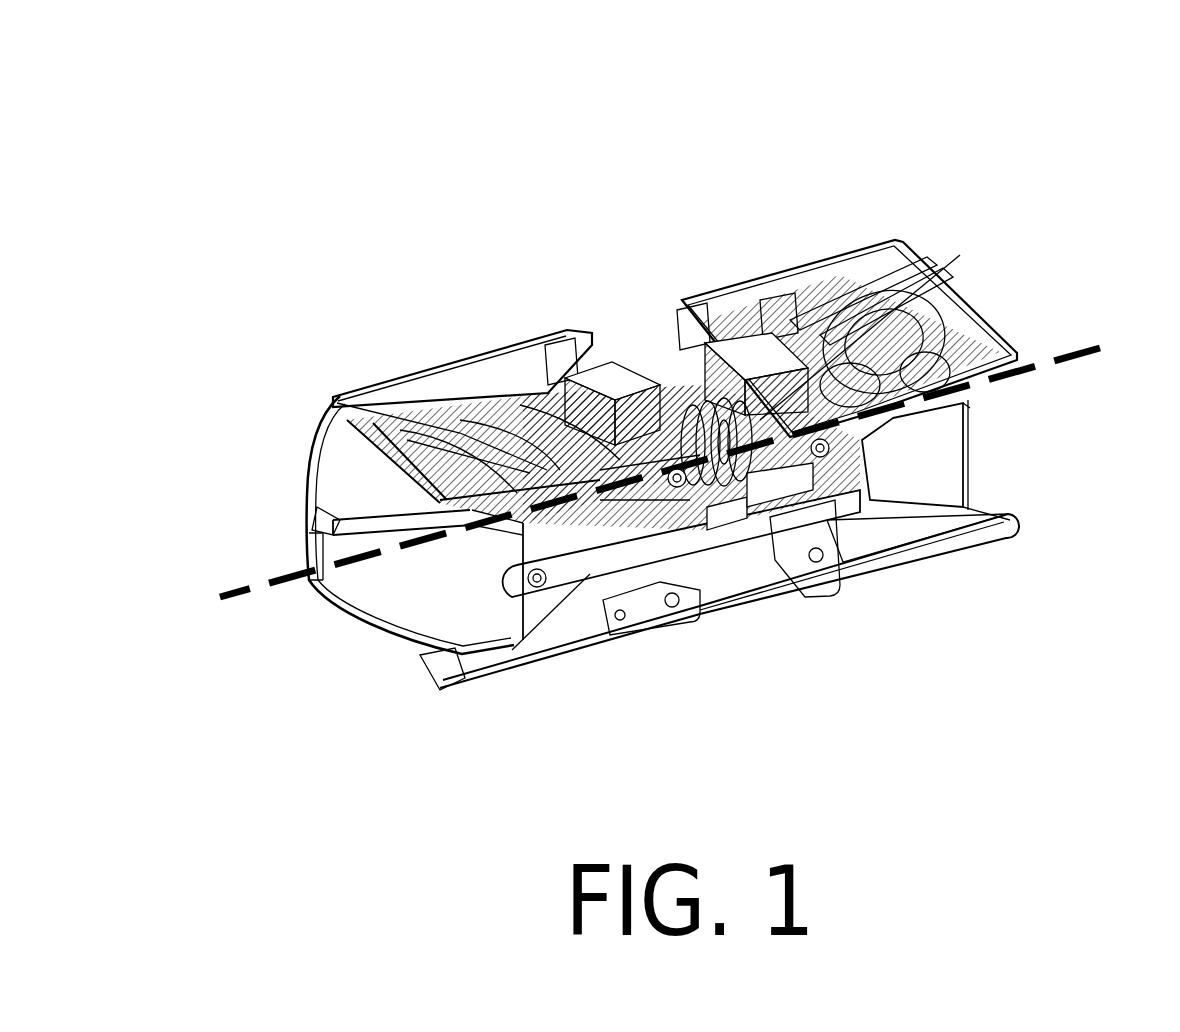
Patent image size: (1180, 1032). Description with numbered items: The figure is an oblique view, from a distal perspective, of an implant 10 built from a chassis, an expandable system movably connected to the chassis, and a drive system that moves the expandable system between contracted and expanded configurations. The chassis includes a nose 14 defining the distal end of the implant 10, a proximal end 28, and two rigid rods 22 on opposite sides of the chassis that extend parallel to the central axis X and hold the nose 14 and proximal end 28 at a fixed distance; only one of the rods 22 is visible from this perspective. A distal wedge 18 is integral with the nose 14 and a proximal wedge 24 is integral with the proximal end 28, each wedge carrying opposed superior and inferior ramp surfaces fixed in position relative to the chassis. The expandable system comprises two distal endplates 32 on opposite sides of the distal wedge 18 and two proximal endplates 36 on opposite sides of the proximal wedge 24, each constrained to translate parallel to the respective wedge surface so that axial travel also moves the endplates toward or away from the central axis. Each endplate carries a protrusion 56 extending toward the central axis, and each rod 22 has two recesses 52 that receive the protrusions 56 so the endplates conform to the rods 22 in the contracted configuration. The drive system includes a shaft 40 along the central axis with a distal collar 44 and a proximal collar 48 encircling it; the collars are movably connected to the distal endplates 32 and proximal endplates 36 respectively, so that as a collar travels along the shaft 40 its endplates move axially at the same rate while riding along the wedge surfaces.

The implant 10 is at (268, 122).
The nose 14 is at (330, 612).
The distal wedge 18 is at (556, 610).
The rods 22 is at (587, 577).
The proximal wedge 24 is at (927, 507).
The proximal end 28 is at (963, 445).
The distal endplates 32 is at (440, 370).
The proximal endplates 36 is at (815, 280).
The shaft 40 is at (700, 415).
The distal collar 44 is at (595, 365).
The proximal collar 48 is at (730, 333).
The recesses 52 is at (770, 517).
The protrusion 56 is at (680, 512).